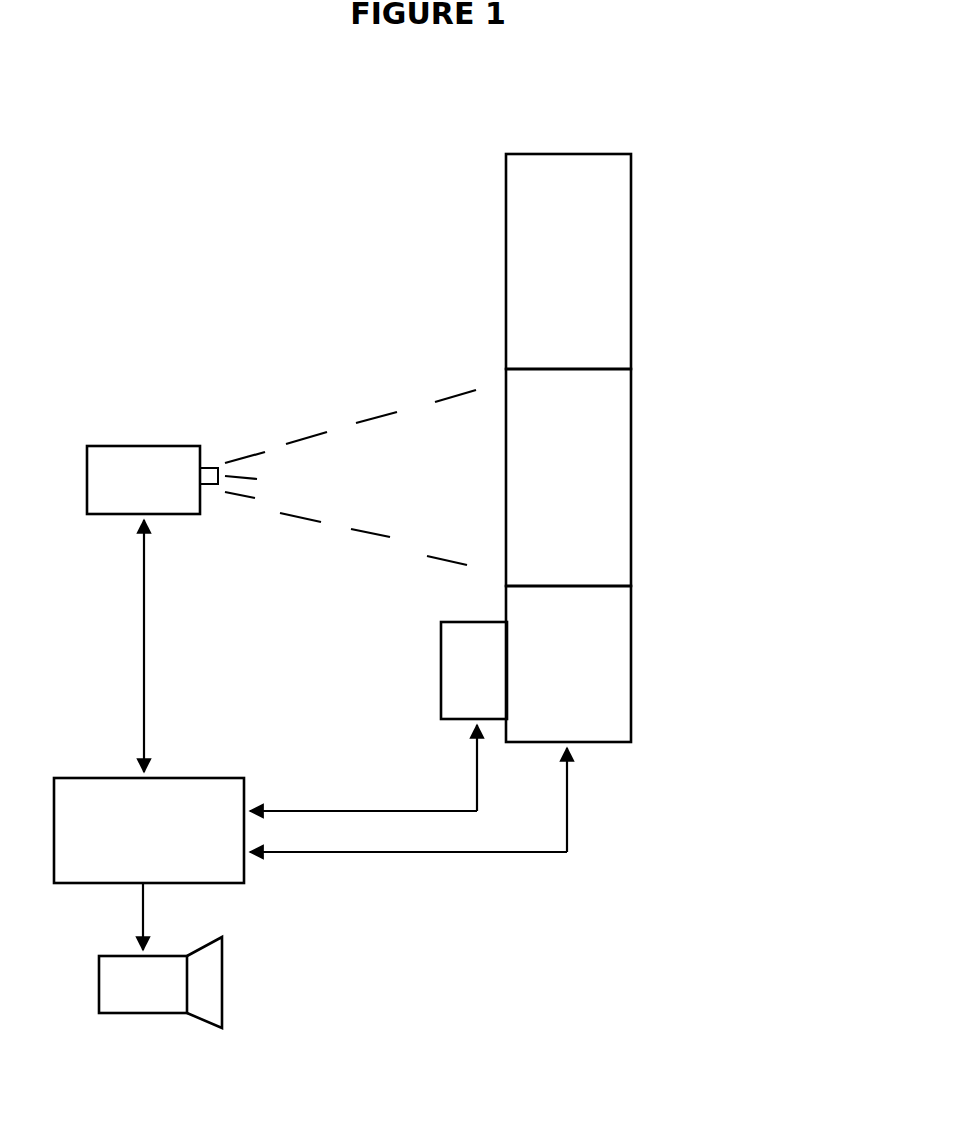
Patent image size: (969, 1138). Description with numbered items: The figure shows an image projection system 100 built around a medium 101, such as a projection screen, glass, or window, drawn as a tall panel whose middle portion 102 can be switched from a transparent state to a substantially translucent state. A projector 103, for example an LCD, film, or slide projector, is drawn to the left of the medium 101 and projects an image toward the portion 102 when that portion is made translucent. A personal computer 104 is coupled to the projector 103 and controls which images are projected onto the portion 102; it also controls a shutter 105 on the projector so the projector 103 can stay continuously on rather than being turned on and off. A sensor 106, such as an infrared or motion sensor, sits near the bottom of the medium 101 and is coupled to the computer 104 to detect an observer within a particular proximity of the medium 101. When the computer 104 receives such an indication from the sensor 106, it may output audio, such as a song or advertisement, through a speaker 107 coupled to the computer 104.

The image projection system 100 is at (734, 141).
The medium 101 is at (620, 260).
The portion 102 is at (618, 488).
The projector 103 is at (113, 453).
The personal computer 104 is at (183, 785).
The shutter 105 is at (350, 477).
The sensor 106 is at (448, 663).
The speaker 107 is at (213, 983).